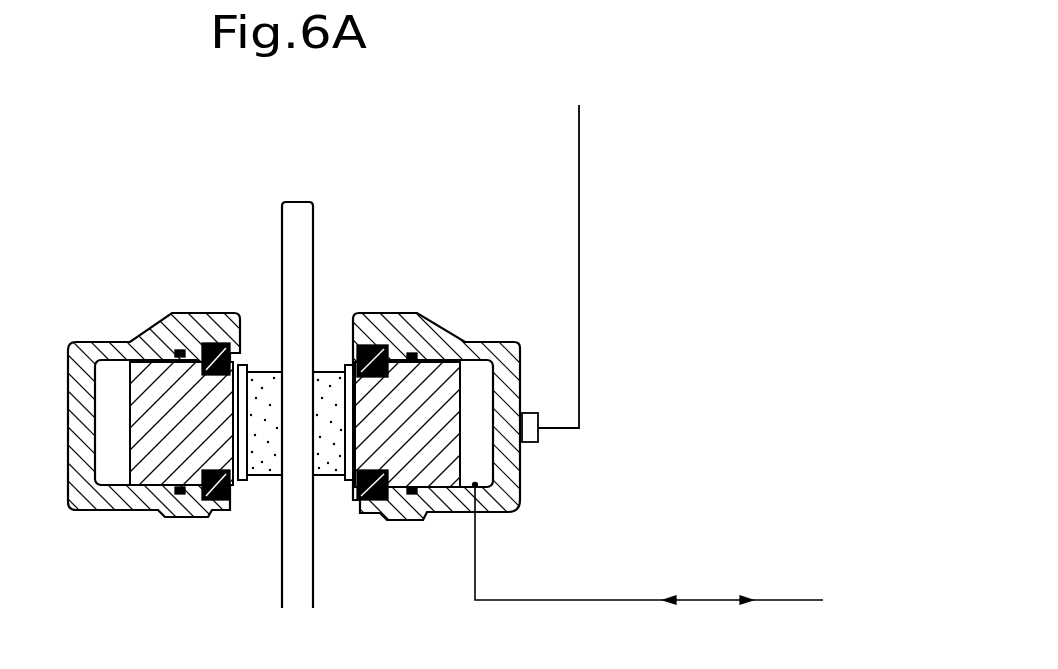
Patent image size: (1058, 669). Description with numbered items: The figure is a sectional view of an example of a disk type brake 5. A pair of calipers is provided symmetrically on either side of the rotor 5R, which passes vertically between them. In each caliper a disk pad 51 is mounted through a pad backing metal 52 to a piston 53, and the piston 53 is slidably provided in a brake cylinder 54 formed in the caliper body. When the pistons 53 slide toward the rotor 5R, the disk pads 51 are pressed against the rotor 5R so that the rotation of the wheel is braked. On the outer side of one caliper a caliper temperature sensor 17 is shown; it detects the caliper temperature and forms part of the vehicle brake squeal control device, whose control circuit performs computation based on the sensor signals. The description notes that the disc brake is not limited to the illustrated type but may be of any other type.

The disk type brake 5 is at (445, 404).
The rotor 5R is at (297, 232).
The disk pad 51 is at (330, 458).
The pad backing metal 52 is at (376, 497).
The piston 53 is at (440, 463).
The brake cylinder 54 is at (500, 512).
The caliper temperature sensor 17 is at (530, 437).